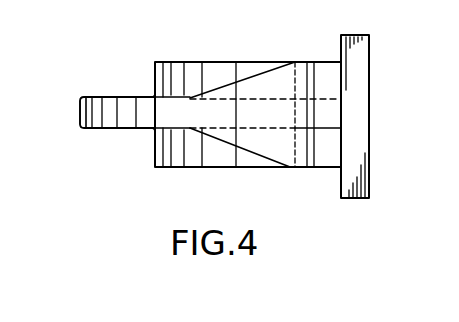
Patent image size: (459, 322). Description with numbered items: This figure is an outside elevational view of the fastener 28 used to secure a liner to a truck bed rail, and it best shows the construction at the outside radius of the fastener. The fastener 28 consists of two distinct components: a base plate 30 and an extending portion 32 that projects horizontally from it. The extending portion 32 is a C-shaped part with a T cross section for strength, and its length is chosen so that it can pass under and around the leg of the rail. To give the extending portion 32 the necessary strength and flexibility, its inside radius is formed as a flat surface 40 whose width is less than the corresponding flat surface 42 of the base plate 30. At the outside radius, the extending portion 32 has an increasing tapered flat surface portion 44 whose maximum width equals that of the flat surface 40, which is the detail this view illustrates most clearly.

The fastener 28 is at (108, 130).
The base plate 30 is at (358, 85).
The extending portion 32 is at (78, 107).
The flat surface 40 is at (235, 68).
The flat surface of the base plate 42 is at (368, 155).
The tapered flat surface portion 44 is at (288, 153).